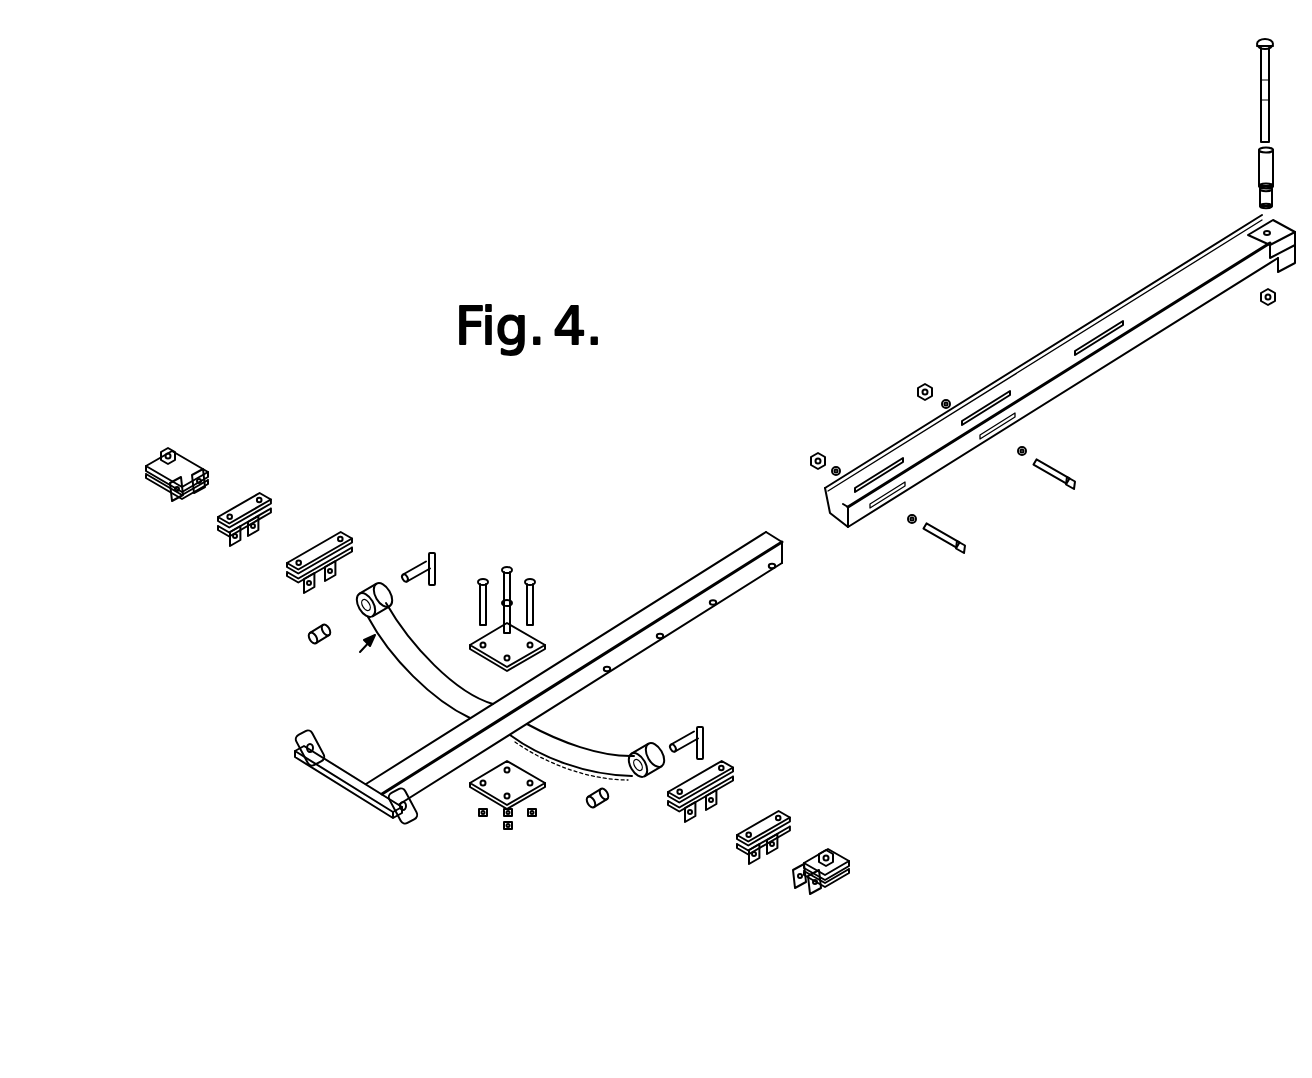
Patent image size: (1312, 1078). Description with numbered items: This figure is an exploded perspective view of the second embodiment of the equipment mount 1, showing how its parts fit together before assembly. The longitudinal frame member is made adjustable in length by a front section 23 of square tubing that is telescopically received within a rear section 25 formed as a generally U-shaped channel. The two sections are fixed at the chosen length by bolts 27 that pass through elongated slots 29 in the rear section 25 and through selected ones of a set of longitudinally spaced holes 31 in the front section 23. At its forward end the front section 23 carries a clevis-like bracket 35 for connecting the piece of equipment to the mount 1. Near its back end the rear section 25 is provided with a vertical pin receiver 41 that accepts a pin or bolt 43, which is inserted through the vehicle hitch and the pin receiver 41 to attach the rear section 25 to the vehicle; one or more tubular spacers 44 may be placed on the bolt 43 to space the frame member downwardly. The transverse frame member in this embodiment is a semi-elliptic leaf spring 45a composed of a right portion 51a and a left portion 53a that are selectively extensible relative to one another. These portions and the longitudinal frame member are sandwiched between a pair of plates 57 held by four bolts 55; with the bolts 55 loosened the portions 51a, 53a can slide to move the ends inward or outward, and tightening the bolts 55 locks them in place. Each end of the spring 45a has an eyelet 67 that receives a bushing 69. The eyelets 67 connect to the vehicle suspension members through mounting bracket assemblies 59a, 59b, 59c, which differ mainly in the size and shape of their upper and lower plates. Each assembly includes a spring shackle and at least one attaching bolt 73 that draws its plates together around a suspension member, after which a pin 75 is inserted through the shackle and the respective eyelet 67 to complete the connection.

The mount 1 is at (762, 330).
The front section 23 is at (620, 623).
The rear section 25 is at (1040, 354).
The bolts 27 is at (1076, 485).
The elongated slots 29 is at (993, 402).
The longitudinally spaced holes 31 is at (610, 672).
The bracket 35 is at (317, 742).
The vertical pin receiver 41 is at (1264, 228).
The pin or bolt 43 is at (1261, 92).
The tubular spacers 44 is at (1258, 178).
The semi-elliptic leaf spring 45a is at (364, 658).
The right portion 51a is at (421, 684).
The left portion 53a is at (568, 746).
The bolts 55 is at (485, 580).
The plates 57 is at (545, 648).
The bracket assembly 59a is at (328, 535).
The bracket assembly 59b is at (258, 498).
The bracket assembly 59c is at (186, 455).
The eyelet 67 is at (370, 590).
The bushing 69 is at (312, 633).
The attaching bolt 73 is at (168, 450).
The pin 75 is at (432, 564).